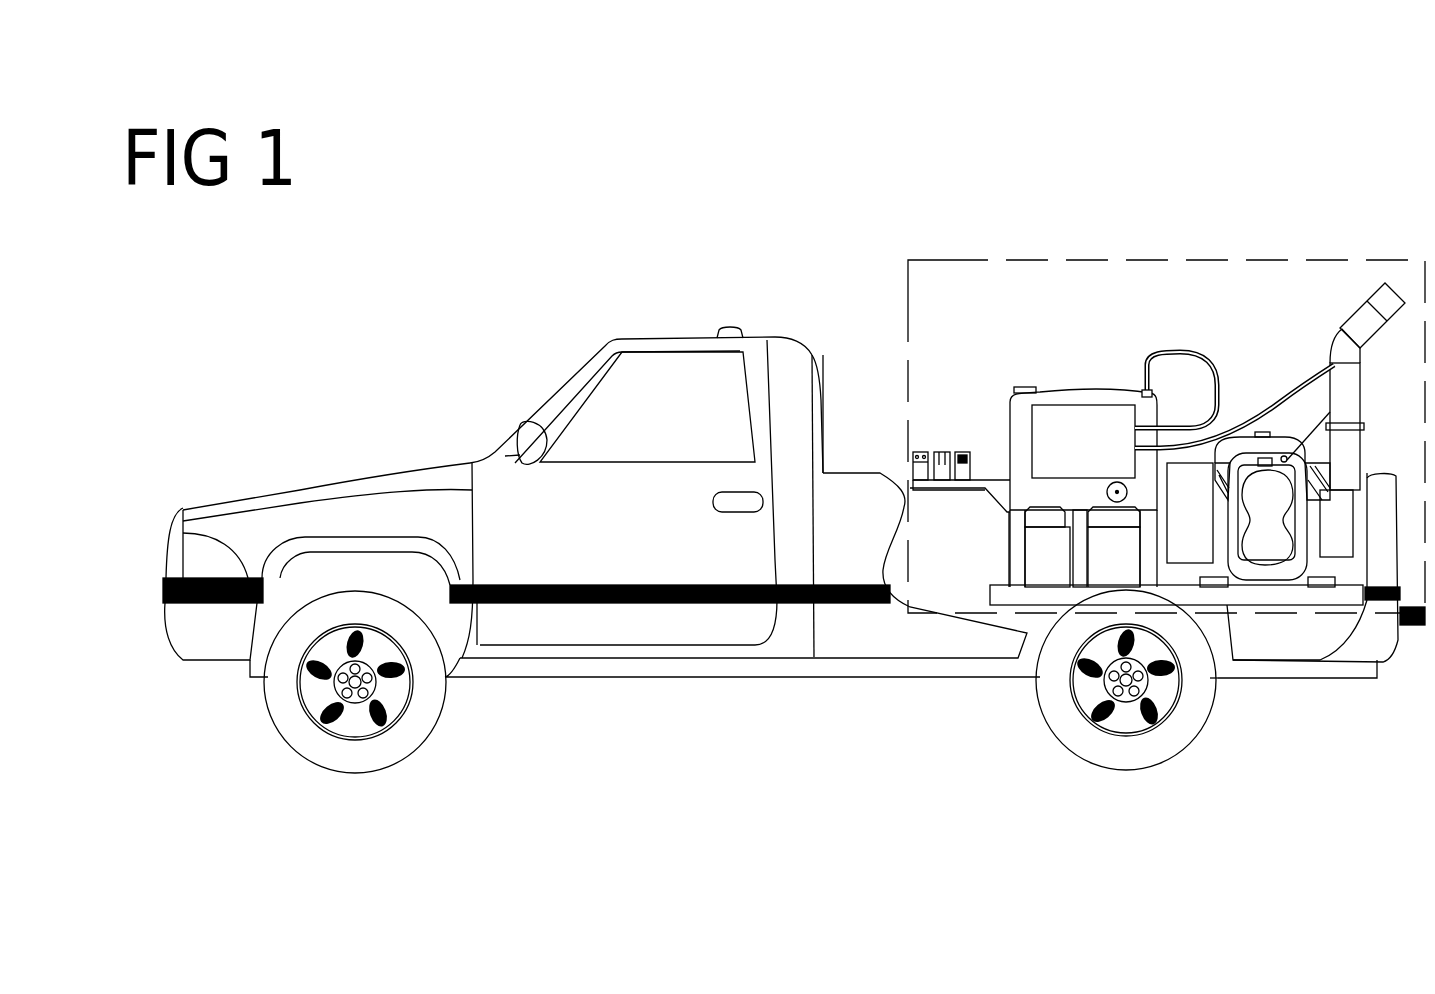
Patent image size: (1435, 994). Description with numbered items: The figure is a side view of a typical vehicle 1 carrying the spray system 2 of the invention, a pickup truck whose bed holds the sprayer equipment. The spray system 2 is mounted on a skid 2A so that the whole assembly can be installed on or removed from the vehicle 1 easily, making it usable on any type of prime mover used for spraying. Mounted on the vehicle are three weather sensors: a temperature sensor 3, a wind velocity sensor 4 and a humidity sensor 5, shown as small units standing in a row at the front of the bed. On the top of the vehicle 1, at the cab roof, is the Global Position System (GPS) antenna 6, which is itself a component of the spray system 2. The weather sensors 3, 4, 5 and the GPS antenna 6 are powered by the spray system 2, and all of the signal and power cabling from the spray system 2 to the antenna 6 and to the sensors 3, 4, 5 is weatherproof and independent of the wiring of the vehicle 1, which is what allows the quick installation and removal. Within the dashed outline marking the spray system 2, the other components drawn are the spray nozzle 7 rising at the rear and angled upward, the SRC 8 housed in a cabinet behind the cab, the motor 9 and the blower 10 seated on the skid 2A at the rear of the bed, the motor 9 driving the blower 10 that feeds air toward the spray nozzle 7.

The vehicle 1 is at (369, 510).
The spray system 2 is at (908, 260).
The skid 2A is at (1010, 595).
The temperature sensor 3 is at (921, 452).
The wind velocity sensor 4 is at (942, 452).
The humidity sensor 5 is at (962, 452).
The Global Position System (GPS) antenna 6 is at (728, 330).
The spray nozzle 7 is at (1385, 298).
The SRC 8 is at (1070, 432).
The motor 9 is at (1241, 446).
The blower 10 is at (1272, 510).